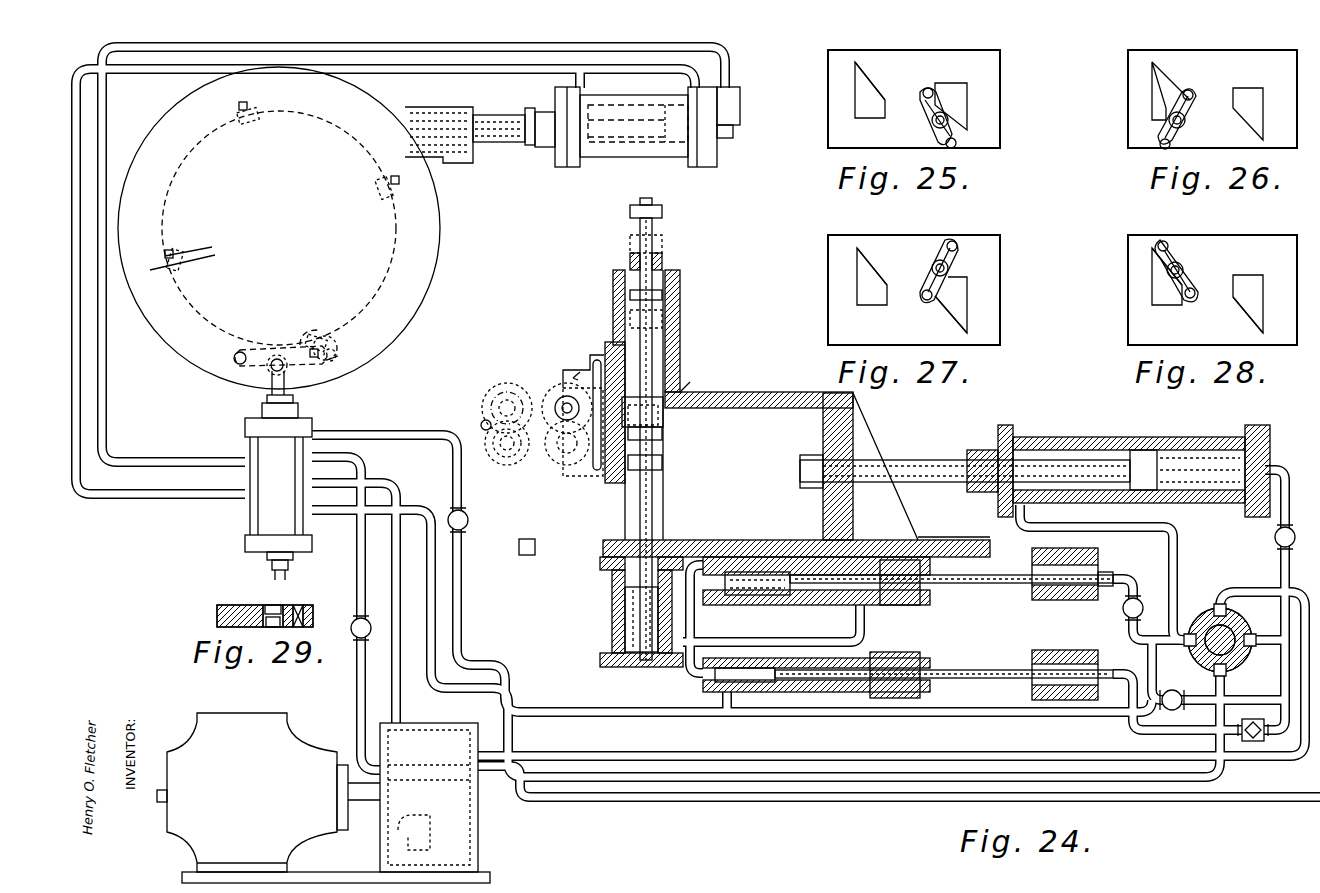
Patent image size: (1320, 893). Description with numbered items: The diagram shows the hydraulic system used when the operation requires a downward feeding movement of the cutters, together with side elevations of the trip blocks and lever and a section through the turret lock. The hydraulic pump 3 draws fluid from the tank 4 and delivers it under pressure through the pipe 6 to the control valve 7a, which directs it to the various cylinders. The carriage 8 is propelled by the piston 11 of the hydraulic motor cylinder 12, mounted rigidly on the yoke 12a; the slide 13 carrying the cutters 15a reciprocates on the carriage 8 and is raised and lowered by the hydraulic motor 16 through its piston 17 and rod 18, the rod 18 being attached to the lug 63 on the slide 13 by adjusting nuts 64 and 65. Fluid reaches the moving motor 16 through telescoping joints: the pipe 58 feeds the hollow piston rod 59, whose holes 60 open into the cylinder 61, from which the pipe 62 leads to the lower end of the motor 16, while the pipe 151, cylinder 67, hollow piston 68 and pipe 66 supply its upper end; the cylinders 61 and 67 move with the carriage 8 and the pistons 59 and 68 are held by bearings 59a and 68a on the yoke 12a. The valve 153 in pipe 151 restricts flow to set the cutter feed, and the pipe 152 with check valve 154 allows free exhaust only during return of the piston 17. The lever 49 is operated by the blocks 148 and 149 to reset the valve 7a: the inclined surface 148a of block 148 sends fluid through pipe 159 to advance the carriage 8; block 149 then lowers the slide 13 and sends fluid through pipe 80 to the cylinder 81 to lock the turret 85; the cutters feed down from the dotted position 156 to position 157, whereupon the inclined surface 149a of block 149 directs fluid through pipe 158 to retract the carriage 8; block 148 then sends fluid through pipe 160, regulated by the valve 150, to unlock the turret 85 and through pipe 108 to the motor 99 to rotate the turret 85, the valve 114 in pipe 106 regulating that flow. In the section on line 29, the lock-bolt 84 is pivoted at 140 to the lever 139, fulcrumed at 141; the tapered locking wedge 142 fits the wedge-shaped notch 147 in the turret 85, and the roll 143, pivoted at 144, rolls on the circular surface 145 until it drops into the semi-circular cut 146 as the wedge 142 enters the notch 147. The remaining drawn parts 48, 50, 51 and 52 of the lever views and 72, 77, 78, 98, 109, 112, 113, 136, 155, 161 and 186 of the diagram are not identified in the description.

In FIG. 24, the hydraulic pump 3 is at (323, 798).
In FIG. 24, the tank 4 is at (478, 824).
In FIG. 24, the pipe 6 is at (815, 782).
In FIG. 24, the valve 7a is at (1196, 608).
In FIG. 24, the carriage 8 is at (768, 392).
In FIG. 24, the piston 11 is at (928, 460).
In FIG. 24, the hydraulic motor cylinder 12 is at (1135, 436).
In FIG. 24, the yoke 12a is at (1098, 552).
In FIG. 24, the slide 13 is at (606, 342).
In FIG. 24, the cutters 15a is at (560, 385).
In FIG. 24, the hydraulic motor 16 is at (612, 612).
In FIG. 24, the piston 17 is at (612, 588).
In FIG. 24, the piston rod 18 is at (640, 307).
In FIG. 24, the section line 29— 29 is at (180, 260).
In FIG. 25, the lever 48 is at (932, 125).
In FIG. 26, the lever 48 is at (1186, 122).
In FIG. 27, the lever 48 is at (932, 268).
In FIG. 28, the lever 48 is at (1184, 266).
In FIG. 25, the lever 49 is at (932, 116).
In FIG. 26, the lever 49 is at (1186, 110).
In FIG. 27, the lever 49 is at (940, 250).
In FIG. 28, the lever 49 is at (1172, 252).
In FIG. 25, the roller 50 is at (923, 94).
In FIG. 26, the roller 50 is at (1192, 92).
In FIG. 27, the roller 50 is at (954, 240).
In FIG. 28, the roller 50 is at (1168, 240).
In FIG. 25, the roller 51 is at (950, 148).
In FIG. 26, the roller 51 is at (1168, 149).
In FIG. 27, the roller 51 is at (922, 298).
In FIG. 28, the roller 51 is at (1195, 296).
In FIG. 25, the plate 52 is at (1000, 60).
In FIG. 26, the plate 52 is at (1128, 60).
In FIG. 27, the plate 52 is at (984, 236).
In FIG. 28, the plate 52 is at (1155, 236).
In FIG. 24, the pipe 58 is at (1123, 580).
In FIG. 24, the hollow piston rod 59 is at (1000, 584).
In FIG. 24, the bearing 59a is at (1068, 588).
In FIG. 24, the holes 60 is at (822, 596).
In FIG. 24, the cylinder 61 is at (790, 590).
In FIG. 24, the pipe 62 is at (770, 640).
In FIG. 24, the lug 63 is at (664, 415).
In FIG. 24, the adjusting nut 64 is at (682, 388).
In FIG. 24, the adjusting nut 65 is at (662, 436).
In FIG. 24, the pipe 66 is at (690, 680).
In FIG. 24, the cylinder 67 is at (895, 652).
In FIG. 24, the hollow piston 68 is at (990, 668).
In FIG. 24, the bearing 68a is at (1055, 652).
In FIG. 24, the pipe 72 is at (605, 719).
In FIG. 24, the cap 77 is at (662, 218).
In FIG. 24, the housing 78 is at (665, 262).
In FIG. 24, the pipe 80 is at (685, 800).
In FIG. 24, the cylinder 81 is at (250, 510).
In FIG. 24, the lock-bolt 84 is at (294, 393).
In FIG. 24, the turret 85 is at (382, 345).
In FIG. 29, the turret 85 is at (217, 609).
In FIG. 24, the shaft 98 is at (497, 140).
In FIG. 24, the motor 99 is at (718, 152).
In FIG. 24, the pipe 106 is at (356, 684).
In FIG. 24, the pipe 108 is at (80, 380).
In FIG. 24, the pipe 109 is at (103, 350).
In FIG. 24, the pipe 112 is at (731, 57).
In FIG. 24, the pipe 113 is at (340, 466).
In FIG. 24, the valve 114 is at (355, 637).
In FIG. 24, the gear 136 is at (562, 398).
In FIG. 24, the lever 139 is at (264, 350).
In FIG. 24, the pivot 140 is at (272, 372).
In FIG. 24, the fulcrum 141 is at (236, 362).
In FIG. 24, the tapered locking wedge 142 is at (333, 340).
In FIG. 29, the tapered locking wedge 142 is at (290, 606).
In FIG. 24, the roll 143 is at (336, 350).
In FIG. 29, the roll 143 is at (313, 612).
In FIG. 24, the pivot 144 is at (338, 356).
In FIG. 29, the pivot 144 is at (300, 606).
In FIG. 24, the circular surface 145 is at (345, 140).
In FIG. 29, the circular surface 145 is at (273, 605).
In FIG. 24, the semi-circular cut 146 is at (244, 128).
In FIG. 24, the wedge-shaped notch 147 is at (250, 110).
In FIG. 29, the wedge-shaped notch 147 is at (268, 606).
In FIG. 25, the block 148 is at (865, 118).
In FIG. 26, the block 148 is at (1152, 88).
In FIG. 27, the block 148 is at (866, 306).
In FIG. 28, the block 148 is at (1152, 274).
In FIG. 25, the inclined surface 148a is at (866, 76).
In FIG. 26, the inclined surface 148a is at (1170, 80).
In FIG. 27, the inclined surface 148a is at (866, 262).
In FIG. 28, the inclined surface 148a is at (1190, 280).
In FIG. 25, the block 149 is at (950, 84).
In FIG. 26, the block 149 is at (1250, 88).
In FIG. 27, the block 149 is at (960, 278).
In FIG. 28, the block 149 is at (1258, 276).
In FIG. 27, the inclined surface 149a is at (940, 306).
In FIG. 28, the inclined surface 149a is at (1245, 310).
In FIG. 24, the valve 150 is at (452, 511).
In FIG. 24, the pipe 151 is at (1295, 706).
In FIG. 24, the pipe 152 is at (1133, 731).
In FIG. 24, the valve 153 is at (1175, 694).
In FIG. 24, the check valve 154 is at (1254, 742).
In FIG. 24, the pin 155 is at (484, 421).
In FIG. 24, the dotted-line position 156 is at (506, 384).
In FIG. 24, the position 157 is at (507, 453).
In FIG. 24, the pipe 158 is at (1168, 530).
In FIG. 24, the pipe 159 is at (1283, 562).
In FIG. 24, the pipe 160 is at (462, 590).
In FIG. 24, the block 161 is at (535, 539).
In FIG. 29, the pin 186 is at (270, 627).